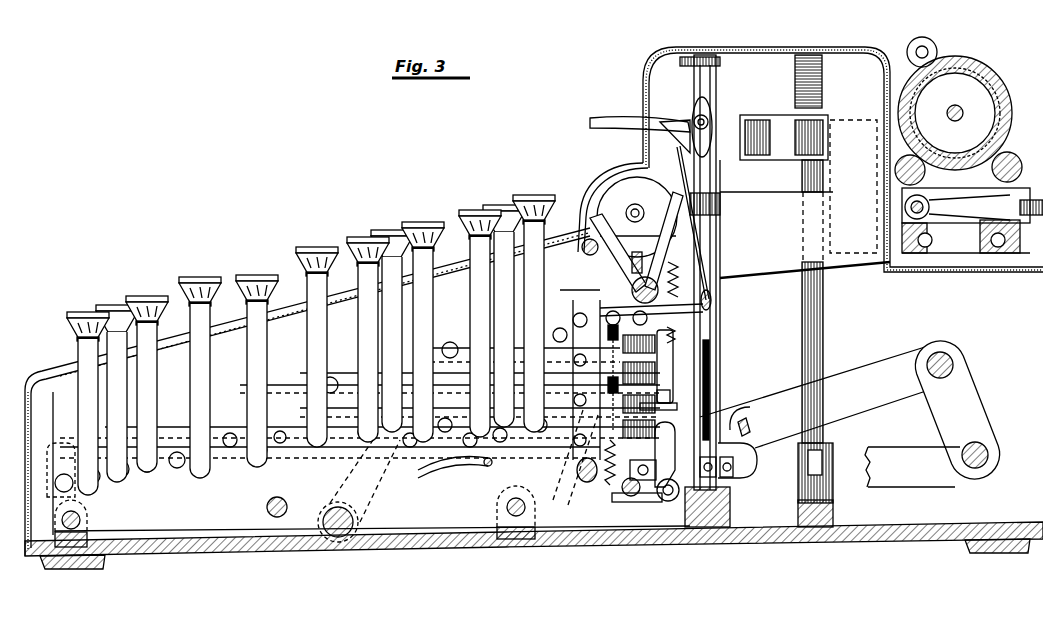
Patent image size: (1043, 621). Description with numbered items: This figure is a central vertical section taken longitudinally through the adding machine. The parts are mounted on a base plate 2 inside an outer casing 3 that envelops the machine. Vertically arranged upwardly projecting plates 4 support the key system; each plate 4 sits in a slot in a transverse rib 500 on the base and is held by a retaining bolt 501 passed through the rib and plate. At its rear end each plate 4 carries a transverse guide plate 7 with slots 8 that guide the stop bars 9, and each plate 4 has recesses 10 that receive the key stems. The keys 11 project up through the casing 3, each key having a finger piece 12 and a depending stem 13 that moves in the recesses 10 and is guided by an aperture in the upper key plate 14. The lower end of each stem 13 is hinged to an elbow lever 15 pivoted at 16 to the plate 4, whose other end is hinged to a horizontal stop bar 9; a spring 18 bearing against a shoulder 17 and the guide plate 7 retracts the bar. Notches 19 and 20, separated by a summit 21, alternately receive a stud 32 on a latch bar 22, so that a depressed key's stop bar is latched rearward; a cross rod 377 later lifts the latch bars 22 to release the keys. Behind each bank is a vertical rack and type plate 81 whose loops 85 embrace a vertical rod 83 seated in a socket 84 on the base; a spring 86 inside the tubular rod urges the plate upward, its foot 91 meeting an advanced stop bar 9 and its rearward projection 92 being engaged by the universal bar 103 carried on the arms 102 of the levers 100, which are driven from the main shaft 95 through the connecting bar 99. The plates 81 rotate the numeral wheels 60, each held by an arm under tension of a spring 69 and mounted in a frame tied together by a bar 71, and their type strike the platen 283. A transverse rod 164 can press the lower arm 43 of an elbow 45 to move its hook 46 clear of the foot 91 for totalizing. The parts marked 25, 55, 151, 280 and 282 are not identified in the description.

The base plate 2 is at (184, 549).
The outer casing 3 is at (1042, 308).
The upwardly projecting plate 4 is at (251, 499).
The transverse guide plate 7 is at (677, 407).
The slot 8 is at (664, 366).
The stop bar 9 is at (350, 384).
The recess 10 is at (200, 478).
The key 11 is at (212, 318).
The finger piece 12 is at (250, 274).
The key stem 13 is at (211, 360).
The key plate 14 is at (290, 327).
The elbow lever 15 is at (150, 470).
The pivot 16 is at (118, 475).
The shoulder 17 is at (605, 470).
The spring 18 is at (649, 454).
The notch 19 is at (560, 332).
The notch 20 is at (572, 336).
The summit 21 is at (565, 455).
The latch bar 22 is at (547, 289).
The bar 25 is at (655, 303).
The stud 32 is at (565, 428).
The lower arm 43 is at (648, 505).
The elbow 45 is at (732, 487).
The hook 46 is at (714, 421).
The spring 55 is at (668, 336).
The numeral wheel 60 is at (637, 216).
The spring 69 is at (588, 238).
The bar 71 is at (702, 250).
The rack and type plate 81 is at (838, 177).
The vertical rod 83 is at (712, 165).
The socket 84 is at (686, 540).
The loop 85 is at (714, 195).
The spring 86 is at (714, 381).
The foot 91 is at (668, 498).
The rearward projection 92 is at (748, 458).
The main shaft 95 is at (330, 545).
The connecting bar 99 is at (900, 470).
The lever 100 is at (977, 418).
The arm 102 is at (877, 366).
The universal bar 103 is at (748, 425).
The cover 151 is at (574, 255).
The transverse rod 164 is at (628, 500).
The spring 280 is at (684, 279).
The drum 282 is at (958, 110).
The platen 283 is at (1000, 150).
The cross rod 377 is at (586, 480).
The transverse rib 500 is at (85, 532).
The retaining bolt 501 is at (45, 560).